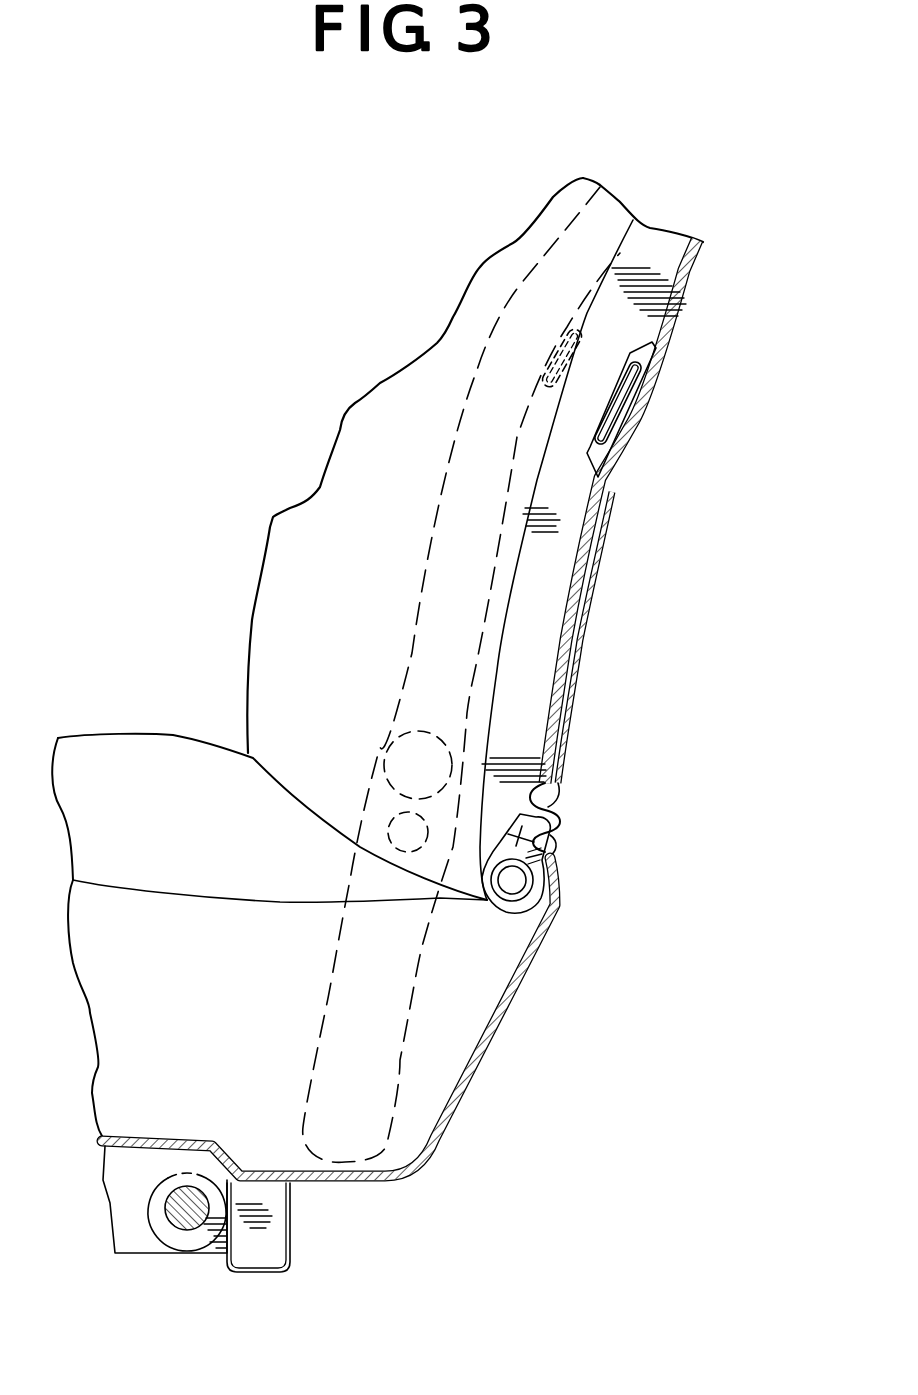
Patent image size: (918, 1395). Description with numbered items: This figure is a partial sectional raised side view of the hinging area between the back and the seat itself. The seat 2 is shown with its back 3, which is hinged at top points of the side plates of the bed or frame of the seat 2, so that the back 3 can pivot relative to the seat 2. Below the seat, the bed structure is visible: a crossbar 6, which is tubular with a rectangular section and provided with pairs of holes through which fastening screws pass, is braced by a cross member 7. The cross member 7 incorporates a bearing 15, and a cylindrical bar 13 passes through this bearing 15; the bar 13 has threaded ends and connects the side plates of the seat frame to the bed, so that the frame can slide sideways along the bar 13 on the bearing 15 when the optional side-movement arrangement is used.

The seat 2 is at (120, 734).
The back 3 is at (337, 441).
The crossbar 6 is at (273, 1232).
The cross member 7 is at (140, 1233).
The cylindrical bar 13 is at (182, 1197).
The bearing 15 is at (177, 1233).